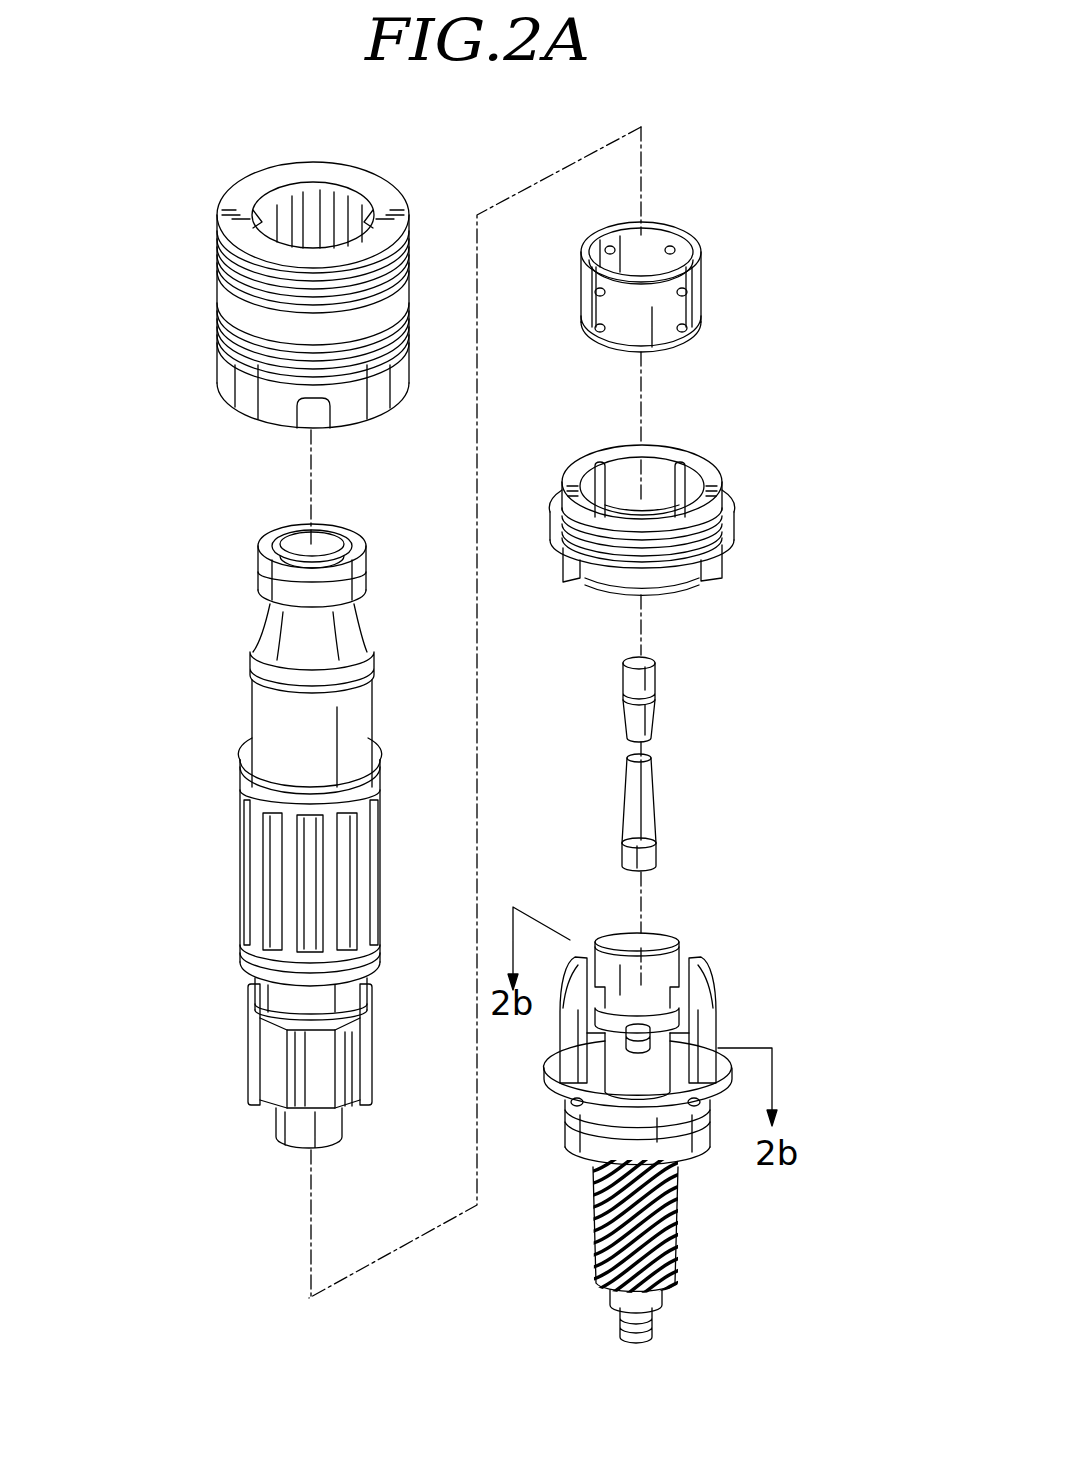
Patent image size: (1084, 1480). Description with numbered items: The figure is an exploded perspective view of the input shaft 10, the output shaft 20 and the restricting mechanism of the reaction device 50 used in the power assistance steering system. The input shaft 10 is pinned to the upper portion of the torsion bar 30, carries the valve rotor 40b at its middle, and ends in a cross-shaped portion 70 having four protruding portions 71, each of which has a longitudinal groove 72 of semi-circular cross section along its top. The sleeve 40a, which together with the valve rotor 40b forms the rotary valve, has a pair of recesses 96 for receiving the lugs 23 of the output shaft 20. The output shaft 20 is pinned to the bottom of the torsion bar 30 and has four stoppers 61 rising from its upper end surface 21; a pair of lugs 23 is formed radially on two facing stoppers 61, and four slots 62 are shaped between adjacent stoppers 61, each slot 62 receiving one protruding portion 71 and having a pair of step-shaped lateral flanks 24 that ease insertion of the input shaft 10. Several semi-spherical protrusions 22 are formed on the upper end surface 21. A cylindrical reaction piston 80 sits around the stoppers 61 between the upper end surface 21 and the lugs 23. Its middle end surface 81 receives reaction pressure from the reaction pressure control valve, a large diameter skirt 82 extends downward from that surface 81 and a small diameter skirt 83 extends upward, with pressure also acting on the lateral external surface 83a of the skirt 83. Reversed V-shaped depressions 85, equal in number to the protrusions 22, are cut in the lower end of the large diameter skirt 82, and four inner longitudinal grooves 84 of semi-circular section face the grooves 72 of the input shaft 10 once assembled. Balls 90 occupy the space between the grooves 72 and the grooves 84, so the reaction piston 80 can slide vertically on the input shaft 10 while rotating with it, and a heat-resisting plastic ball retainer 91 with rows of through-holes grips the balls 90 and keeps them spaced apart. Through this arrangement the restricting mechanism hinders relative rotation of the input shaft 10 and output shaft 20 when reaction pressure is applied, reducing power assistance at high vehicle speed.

The input shaft 10 is at (272, 578).
The output shaft 20 is at (815, 1065).
The upper end surface 21 is at (675, 1120).
The semi-spherical protrusions 22 is at (576, 1108).
The lugs 23 is at (626, 1042).
The step-shaped lateral flanks 24 is at (593, 1033).
The torsion bar 30 is at (656, 718).
The sleeve 40a is at (224, 292).
The valve rotor 40b is at (238, 845).
The reaction device 50 is at (708, 168).
The stoppers 61 is at (716, 975).
The slots 62 is at (680, 935).
The cross-shaped portion 70 is at (152, 1000).
The protruding portions 71 is at (255, 1018).
The longitudinal groove 72 is at (256, 1066).
The reaction piston 80 is at (758, 543).
The middle end surface 81 is at (714, 568).
The large diameter skirt 82 is at (612, 590).
The small diameter skirt 83 is at (658, 448).
The lateral external surface 83a is at (708, 497).
The inner longitudinal grooves 84 is at (600, 466).
The reversed V-shaped depressions 85 is at (582, 580).
The balls 90 is at (704, 290).
The ball retainer 91 is at (690, 237).
The recesses 96 is at (305, 428).